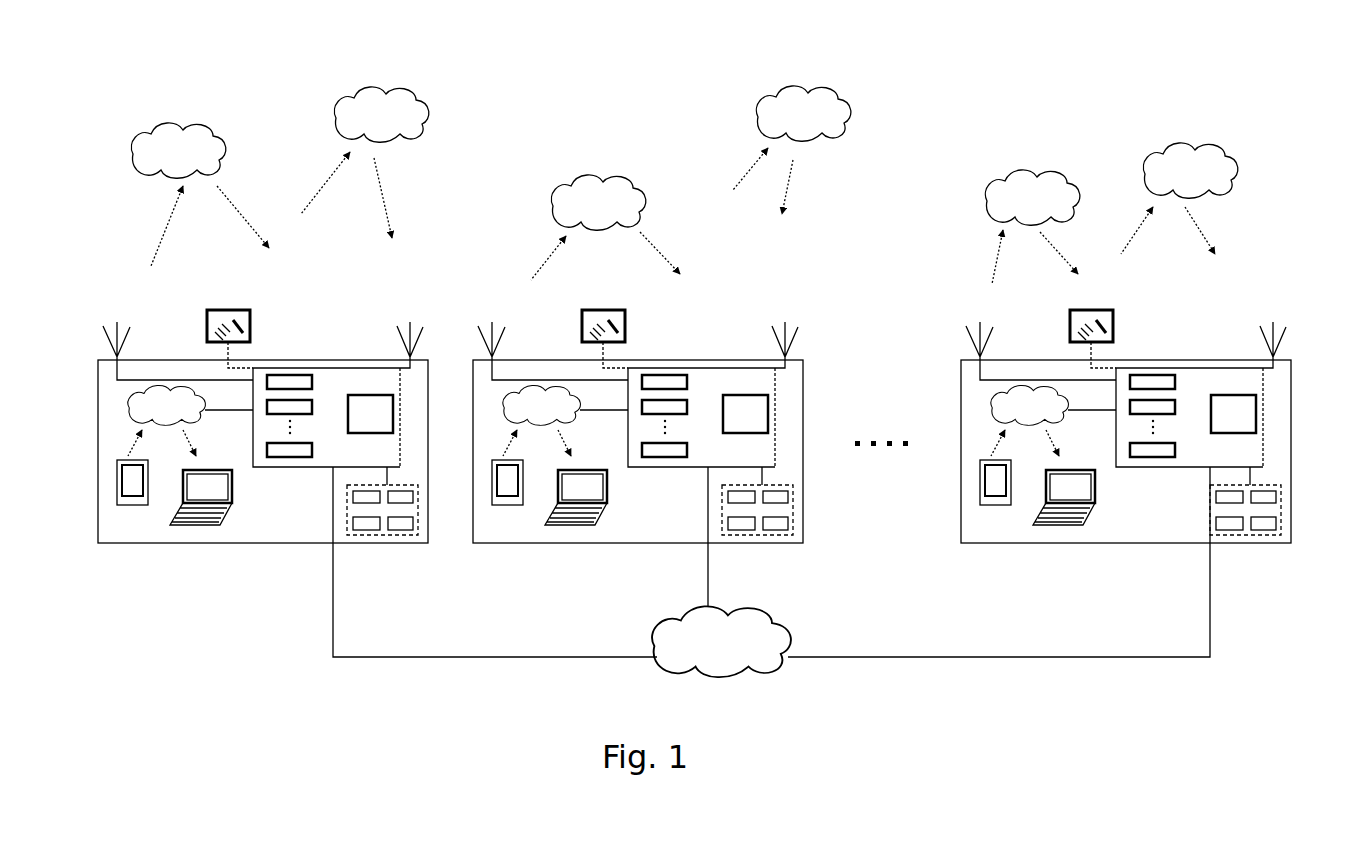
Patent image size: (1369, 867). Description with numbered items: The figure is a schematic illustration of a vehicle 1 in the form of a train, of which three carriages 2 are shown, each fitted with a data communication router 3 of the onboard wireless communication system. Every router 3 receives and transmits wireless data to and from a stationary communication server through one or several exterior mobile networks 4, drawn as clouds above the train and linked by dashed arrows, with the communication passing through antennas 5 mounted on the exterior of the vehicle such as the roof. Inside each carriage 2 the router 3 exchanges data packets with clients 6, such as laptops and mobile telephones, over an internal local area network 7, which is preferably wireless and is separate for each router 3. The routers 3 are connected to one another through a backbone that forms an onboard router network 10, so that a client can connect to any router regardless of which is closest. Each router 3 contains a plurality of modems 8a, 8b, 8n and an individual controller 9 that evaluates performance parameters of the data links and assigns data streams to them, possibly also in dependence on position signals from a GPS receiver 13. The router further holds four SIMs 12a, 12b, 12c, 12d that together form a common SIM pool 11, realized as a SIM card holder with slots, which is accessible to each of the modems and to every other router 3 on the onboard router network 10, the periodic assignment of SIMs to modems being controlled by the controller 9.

The vehicle 1 is at (116, 298).
The carriage 2 is at (98, 414).
The data communication router 3 is at (360, 368).
The exterior mobile network 4 is at (183, 122).
The antenna 5 is at (124, 344).
The client 6 is at (120, 506).
The internal local area network 7 is at (622, 421).
The modem 8a is at (275, 375).
The modem 8b is at (293, 400).
The modem 8n is at (283, 457).
The controller 9 is at (802, 414).
The onboard router network 10 is at (771, 572).
The SIM pool 11 is at (420, 492).
The SIM 12a is at (410, 503).
The SIM 12b is at (400, 530).
The SIM 12c is at (353, 527).
The SIM 12d is at (353, 496).
The GPS receiver 13 is at (215, 312).